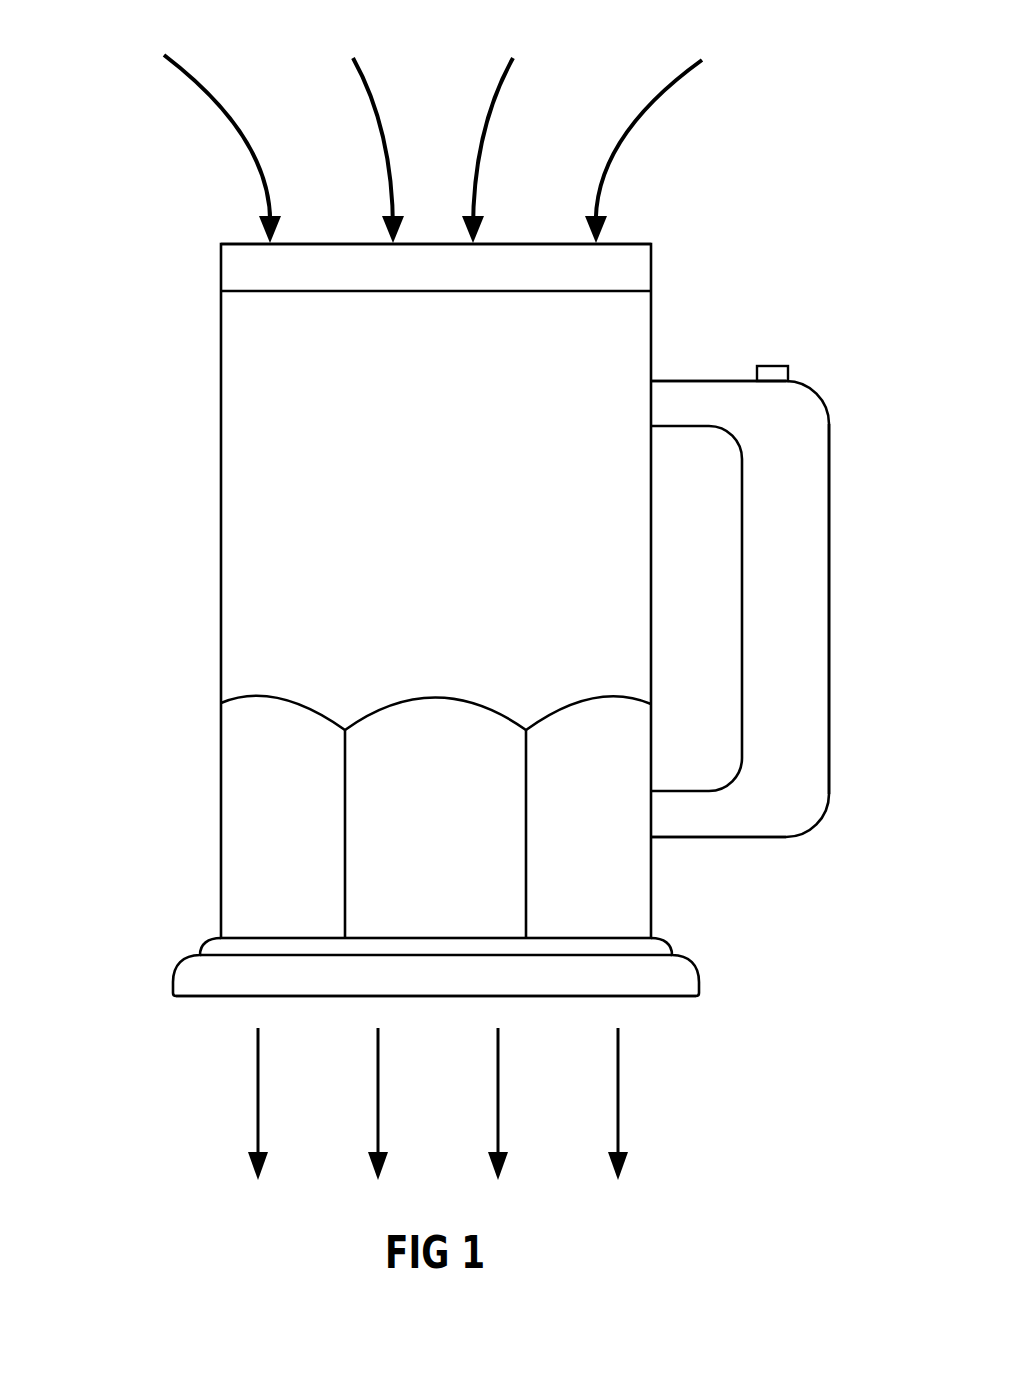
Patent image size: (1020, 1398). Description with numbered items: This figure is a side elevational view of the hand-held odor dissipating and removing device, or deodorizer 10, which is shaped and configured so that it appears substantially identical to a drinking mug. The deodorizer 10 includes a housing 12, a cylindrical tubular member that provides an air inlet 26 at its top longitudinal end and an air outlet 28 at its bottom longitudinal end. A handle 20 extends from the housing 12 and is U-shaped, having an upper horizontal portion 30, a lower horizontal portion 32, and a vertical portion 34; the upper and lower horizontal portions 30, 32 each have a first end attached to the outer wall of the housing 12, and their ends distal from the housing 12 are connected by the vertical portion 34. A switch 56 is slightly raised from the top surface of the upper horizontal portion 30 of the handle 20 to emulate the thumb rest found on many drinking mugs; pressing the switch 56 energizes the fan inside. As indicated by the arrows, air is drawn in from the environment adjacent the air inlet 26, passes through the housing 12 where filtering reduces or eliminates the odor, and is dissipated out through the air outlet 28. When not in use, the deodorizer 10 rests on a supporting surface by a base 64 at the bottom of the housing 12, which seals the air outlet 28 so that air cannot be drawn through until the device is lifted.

The hand-held odor dissipating and removing device 10 is at (137, 183).
The housing 12 is at (221, 544).
The handle 20 is at (817, 556).
The air inlet 26 is at (429, 244).
The air outlet 28 is at (449, 996).
The upper horizontal portion 30 is at (692, 398).
The lower horizontal portion 32 is at (700, 837).
The vertical portion 34 is at (817, 738).
The switch 56 is at (775, 366).
The base 64 is at (176, 970).